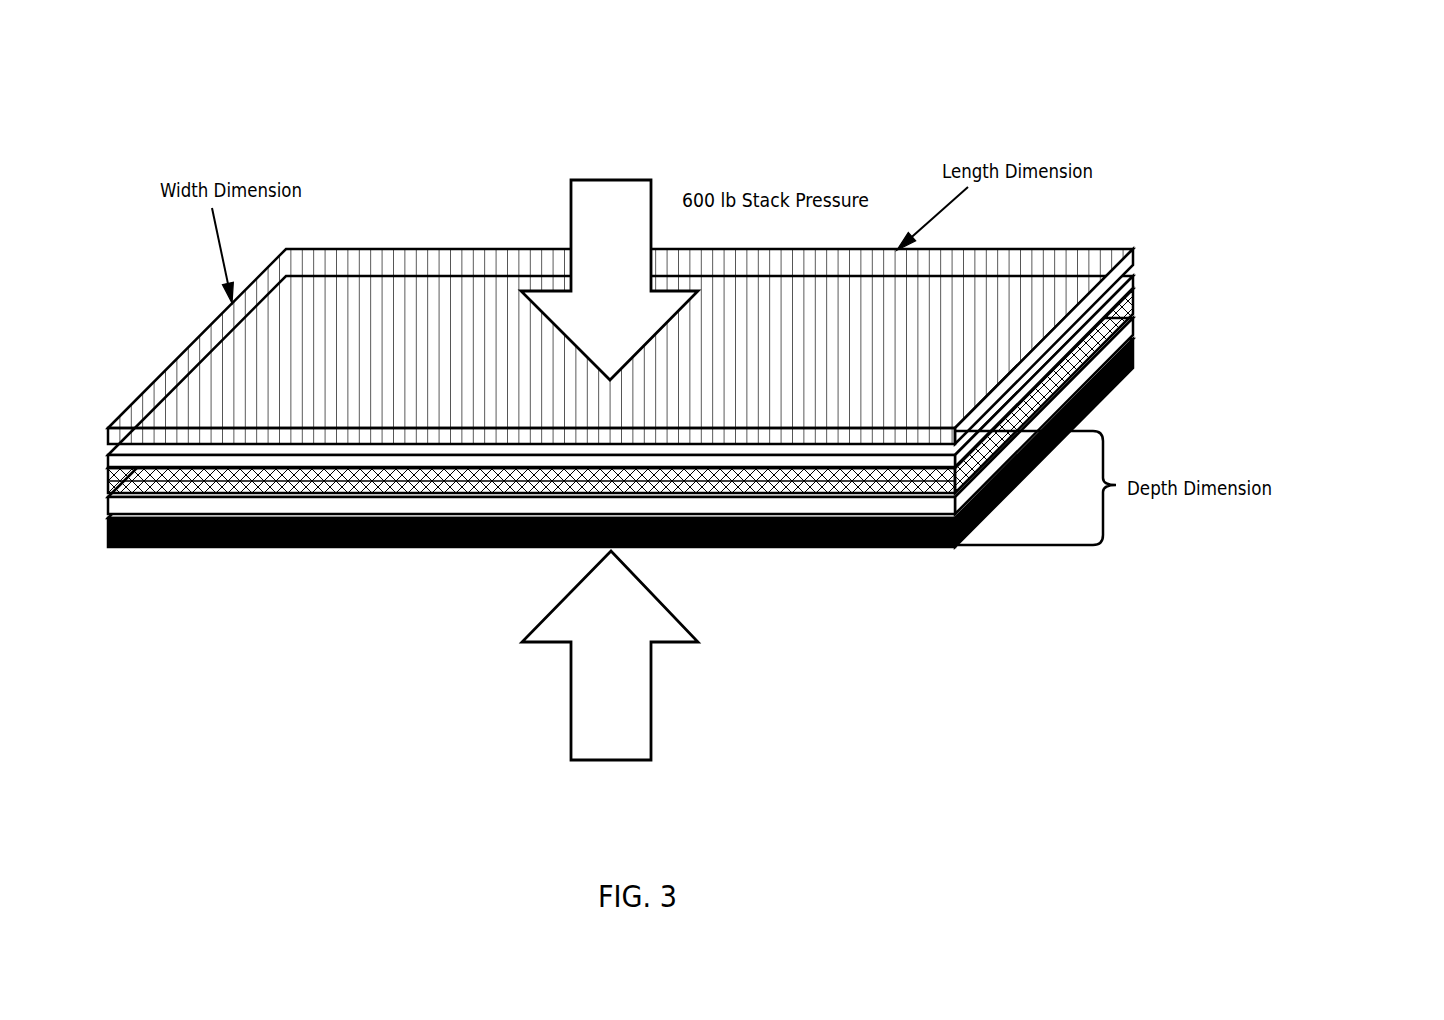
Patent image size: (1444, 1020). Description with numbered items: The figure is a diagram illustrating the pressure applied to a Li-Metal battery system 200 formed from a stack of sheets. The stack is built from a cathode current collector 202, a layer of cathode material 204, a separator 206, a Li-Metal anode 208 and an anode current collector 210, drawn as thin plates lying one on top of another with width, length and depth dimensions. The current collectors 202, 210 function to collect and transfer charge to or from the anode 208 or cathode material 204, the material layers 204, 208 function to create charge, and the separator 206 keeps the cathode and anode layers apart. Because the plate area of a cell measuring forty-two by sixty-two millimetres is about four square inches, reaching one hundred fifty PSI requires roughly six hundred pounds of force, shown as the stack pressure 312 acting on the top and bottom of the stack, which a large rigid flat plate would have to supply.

The battery cell stack 200 is at (1234, 76).
The cathode current collector 202 is at (1135, 252).
The cathode material 204 is at (1136, 280).
The separator 206 is at (1136, 305).
The Li-Metal anode 208 is at (1136, 331).
The anode current collector 210 is at (1136, 357).
The pressure 312 is at (571, 180).